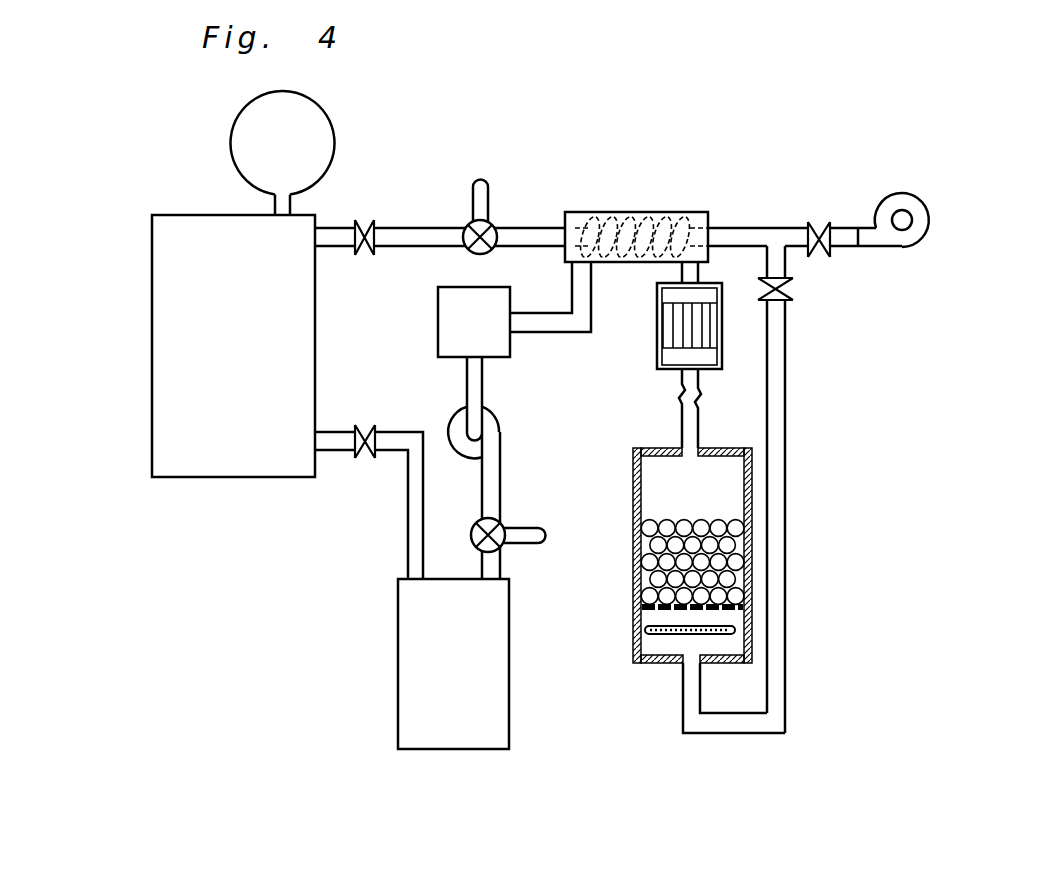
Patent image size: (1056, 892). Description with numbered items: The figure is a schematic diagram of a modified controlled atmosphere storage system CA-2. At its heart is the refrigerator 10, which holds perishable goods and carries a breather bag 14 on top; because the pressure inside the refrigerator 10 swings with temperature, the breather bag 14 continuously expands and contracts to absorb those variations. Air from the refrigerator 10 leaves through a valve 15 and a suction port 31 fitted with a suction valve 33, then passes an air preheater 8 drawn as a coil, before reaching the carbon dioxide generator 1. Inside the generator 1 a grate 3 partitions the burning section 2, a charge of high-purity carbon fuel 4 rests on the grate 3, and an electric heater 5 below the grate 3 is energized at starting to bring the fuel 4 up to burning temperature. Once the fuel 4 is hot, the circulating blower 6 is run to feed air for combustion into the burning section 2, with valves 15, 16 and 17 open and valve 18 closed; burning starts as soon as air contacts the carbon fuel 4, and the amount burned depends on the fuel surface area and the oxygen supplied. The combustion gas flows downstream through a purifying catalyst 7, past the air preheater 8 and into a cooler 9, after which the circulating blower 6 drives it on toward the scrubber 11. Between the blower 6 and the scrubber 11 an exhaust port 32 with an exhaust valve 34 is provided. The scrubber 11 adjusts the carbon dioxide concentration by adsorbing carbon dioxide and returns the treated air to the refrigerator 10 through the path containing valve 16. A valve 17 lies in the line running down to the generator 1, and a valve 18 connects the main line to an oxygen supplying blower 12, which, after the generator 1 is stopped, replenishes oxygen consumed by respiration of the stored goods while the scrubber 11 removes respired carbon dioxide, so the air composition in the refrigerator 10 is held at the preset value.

The carbon dioxide generator 1 is at (629, 570).
The burning section 2 is at (722, 488).
The grate 3 is at (745, 602).
The carbon fuel 4 is at (728, 522).
The electric heater 5 is at (655, 631).
The circulating blower 6 is at (490, 437).
The purifying catalyst 7 is at (657, 335).
The air preheater 8 is at (655, 212).
The cooler 9 is at (437, 340).
The refrigerator 10 is at (152, 352).
The scrubber 11 is at (400, 636).
The oxygen supplying blower 12 is at (929, 220).
The breather bag 14 is at (240, 112).
The valve 15 is at (366, 225).
The valve 16 is at (357, 456).
The valve 17 is at (794, 289).
The valve 18 is at (822, 222).
The suction port 31 is at (483, 203).
The exhaust port 32 is at (528, 528).
The suction valve 33 is at (467, 234).
The exhaust valve 34 is at (497, 545).
The CA storage system CA-2 is at (870, 177).